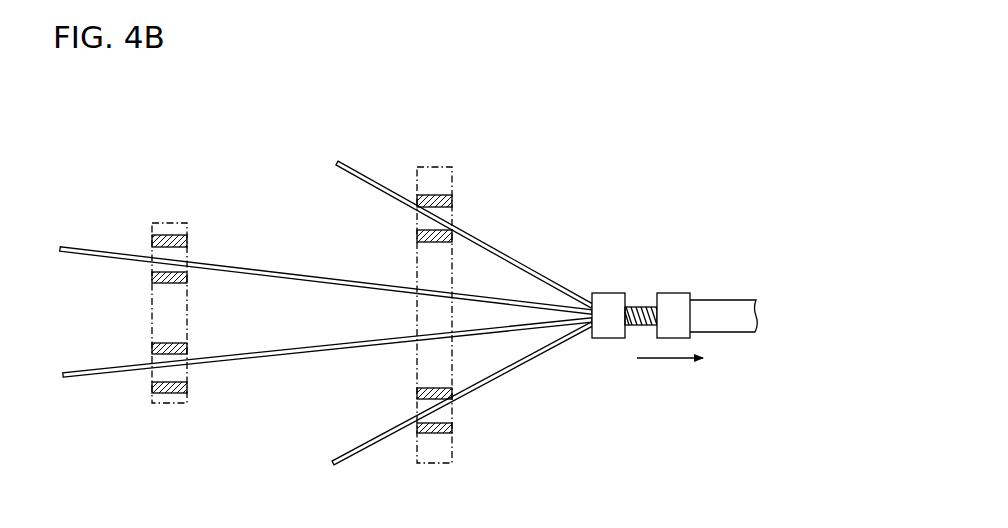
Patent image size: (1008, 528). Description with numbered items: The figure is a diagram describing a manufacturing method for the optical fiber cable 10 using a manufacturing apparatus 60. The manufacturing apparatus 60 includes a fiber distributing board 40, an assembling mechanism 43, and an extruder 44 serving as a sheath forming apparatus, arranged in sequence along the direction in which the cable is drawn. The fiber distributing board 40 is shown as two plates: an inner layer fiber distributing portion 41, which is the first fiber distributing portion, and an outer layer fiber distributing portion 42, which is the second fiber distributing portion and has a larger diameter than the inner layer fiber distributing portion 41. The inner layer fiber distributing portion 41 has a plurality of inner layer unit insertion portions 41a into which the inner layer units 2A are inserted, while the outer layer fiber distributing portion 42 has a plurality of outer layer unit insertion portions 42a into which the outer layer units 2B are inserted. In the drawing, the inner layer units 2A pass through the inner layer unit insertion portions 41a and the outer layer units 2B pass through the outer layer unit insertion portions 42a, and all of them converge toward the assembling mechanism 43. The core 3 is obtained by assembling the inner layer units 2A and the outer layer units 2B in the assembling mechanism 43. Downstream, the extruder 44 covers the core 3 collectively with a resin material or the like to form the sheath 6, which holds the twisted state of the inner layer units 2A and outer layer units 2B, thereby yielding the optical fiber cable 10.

The inner layer unit 2A is at (95, 247).
The outer layer unit 2B is at (382, 180).
The core 3 is at (641, 307).
The sheath 6 is at (710, 300).
The optical fiber cable 10 is at (713, 333).
The fiber distributing board 40 is at (524, 161).
The inner layer fiber distributing portion 41 is at (173, 222).
The inner layer unit insertion portion 41a is at (190, 249).
The outer layer fiber distributing portion 42 is at (438, 165).
The outer layer unit insertion portion 42a is at (452, 215).
The assembling mechanism 43 is at (608, 293).
The extruder 44 is at (675, 293).
The manufacturing apparatus 60 is at (665, 141).